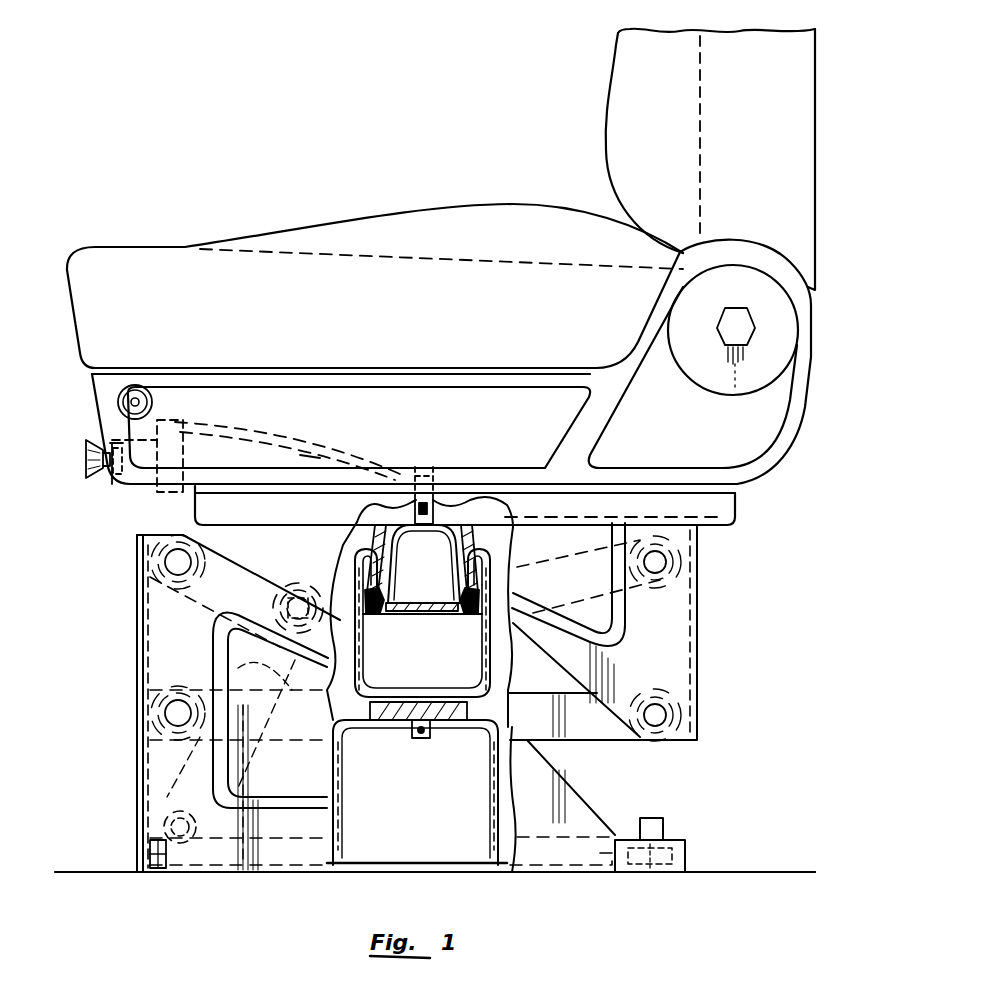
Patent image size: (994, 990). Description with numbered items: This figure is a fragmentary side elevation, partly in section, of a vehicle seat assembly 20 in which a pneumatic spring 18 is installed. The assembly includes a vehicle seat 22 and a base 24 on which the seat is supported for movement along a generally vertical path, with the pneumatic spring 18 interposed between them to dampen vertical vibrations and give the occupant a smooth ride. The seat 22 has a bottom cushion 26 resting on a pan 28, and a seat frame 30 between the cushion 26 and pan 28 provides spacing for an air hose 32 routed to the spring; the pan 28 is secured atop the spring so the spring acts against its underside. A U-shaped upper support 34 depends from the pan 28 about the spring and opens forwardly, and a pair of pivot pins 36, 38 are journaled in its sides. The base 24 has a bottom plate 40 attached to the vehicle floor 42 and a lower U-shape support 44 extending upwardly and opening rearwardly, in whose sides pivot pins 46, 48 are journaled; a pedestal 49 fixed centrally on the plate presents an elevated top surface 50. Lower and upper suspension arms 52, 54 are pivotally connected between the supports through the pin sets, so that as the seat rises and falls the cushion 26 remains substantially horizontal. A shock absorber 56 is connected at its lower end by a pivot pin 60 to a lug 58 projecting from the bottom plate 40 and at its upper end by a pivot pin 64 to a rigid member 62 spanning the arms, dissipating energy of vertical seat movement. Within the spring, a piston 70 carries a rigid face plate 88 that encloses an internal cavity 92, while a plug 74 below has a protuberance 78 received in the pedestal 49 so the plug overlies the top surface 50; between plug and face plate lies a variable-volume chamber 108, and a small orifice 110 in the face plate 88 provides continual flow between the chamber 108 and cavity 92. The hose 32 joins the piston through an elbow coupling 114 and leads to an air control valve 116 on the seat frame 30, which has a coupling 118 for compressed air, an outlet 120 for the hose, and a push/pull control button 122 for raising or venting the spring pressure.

The pneumatic spring 18 is at (385, 498).
The vehicle seat assembly 20 is at (124, 224).
The vehicle seat 22 is at (826, 195).
The base 24 is at (625, 839).
The bottom cushion 26 is at (104, 326).
The pan 28 is at (740, 503).
The seat frame 30 is at (98, 399).
The air hose 32 is at (308, 451).
The U-shaped upper support 34 is at (700, 615).
The pivot pin 36 is at (667, 562).
The pivot pin 38 is at (667, 713).
The bottom plate 40 is at (690, 870).
The vehicle floor 42 is at (93, 871).
The lower U-shape support 44 is at (137, 770).
The pivot pin 46 is at (163, 560).
The pivot pin 48 is at (165, 712).
The pedestal 49 is at (503, 778).
The top surface 50 is at (498, 690).
The suspension arm 52 is at (338, 580).
The suspension arm 54 is at (603, 741).
The shock absorber 56 is at (218, 675).
The lug 58 is at (148, 866).
The pivot pin 60 is at (168, 821).
The rigid member 62 is at (293, 597).
The pivot pin 64 is at (311, 597).
The piston 70 is at (513, 541).
The plug 74 is at (397, 712).
The protuberance 78 is at (431, 741).
The face plate 88 is at (400, 614).
The internal cavity 92 is at (406, 569).
The variable-volume chamber 108 is at (409, 685).
The orifice 110 is at (426, 612).
The elbow coupling 114 is at (440, 476).
The air control valve 116 is at (111, 468).
The coupling 118 is at (112, 430).
The outlet 120 is at (163, 420).
The push/pull type control button 122 is at (84, 462).